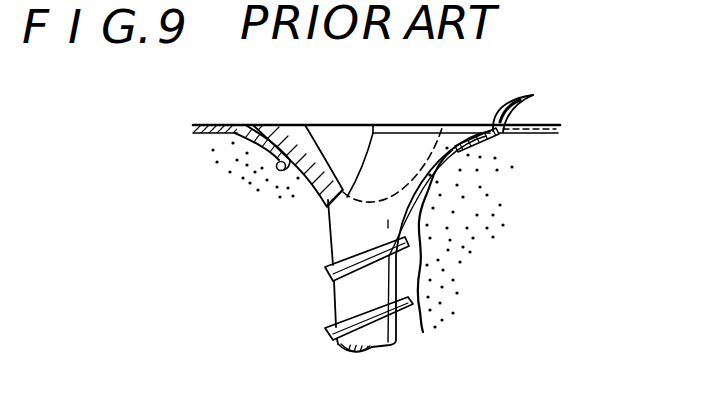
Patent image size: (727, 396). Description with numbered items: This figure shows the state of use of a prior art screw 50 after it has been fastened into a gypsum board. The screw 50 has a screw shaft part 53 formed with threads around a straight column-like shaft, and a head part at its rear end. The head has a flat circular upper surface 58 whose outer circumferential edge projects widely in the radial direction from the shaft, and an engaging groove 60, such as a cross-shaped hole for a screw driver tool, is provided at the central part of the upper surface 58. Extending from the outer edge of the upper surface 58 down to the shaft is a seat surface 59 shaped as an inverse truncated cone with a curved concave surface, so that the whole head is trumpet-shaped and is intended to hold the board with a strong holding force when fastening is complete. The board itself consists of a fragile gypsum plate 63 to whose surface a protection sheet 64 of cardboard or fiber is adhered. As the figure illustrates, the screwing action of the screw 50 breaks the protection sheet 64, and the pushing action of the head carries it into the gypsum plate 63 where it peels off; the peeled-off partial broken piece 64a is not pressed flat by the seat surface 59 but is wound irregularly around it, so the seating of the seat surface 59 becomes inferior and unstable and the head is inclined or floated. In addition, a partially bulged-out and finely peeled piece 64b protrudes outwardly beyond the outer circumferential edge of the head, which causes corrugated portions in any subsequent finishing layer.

The screw 50 is at (418, 110).
The screw shaft part 53 is at (328, 308).
The upper surface 58 is at (275, 125).
The seat surface 59 is at (442, 158).
The engaging groove 60 is at (320, 135).
The gypsum plate 63 is at (455, 207).
The protection sheet 64 is at (215, 124).
The peeled-off partial broken piece 64a is at (276, 167).
The partially bulged-out and finely peeled piece 64b is at (533, 95).